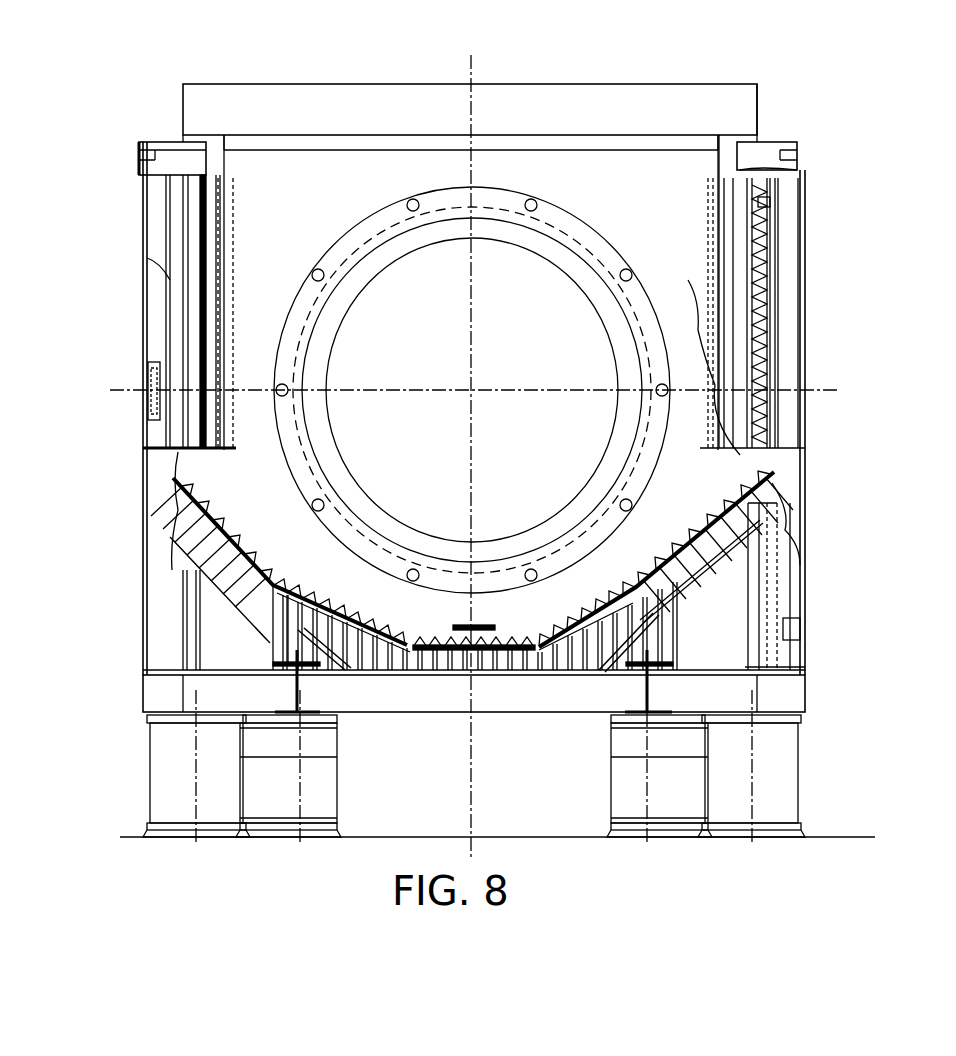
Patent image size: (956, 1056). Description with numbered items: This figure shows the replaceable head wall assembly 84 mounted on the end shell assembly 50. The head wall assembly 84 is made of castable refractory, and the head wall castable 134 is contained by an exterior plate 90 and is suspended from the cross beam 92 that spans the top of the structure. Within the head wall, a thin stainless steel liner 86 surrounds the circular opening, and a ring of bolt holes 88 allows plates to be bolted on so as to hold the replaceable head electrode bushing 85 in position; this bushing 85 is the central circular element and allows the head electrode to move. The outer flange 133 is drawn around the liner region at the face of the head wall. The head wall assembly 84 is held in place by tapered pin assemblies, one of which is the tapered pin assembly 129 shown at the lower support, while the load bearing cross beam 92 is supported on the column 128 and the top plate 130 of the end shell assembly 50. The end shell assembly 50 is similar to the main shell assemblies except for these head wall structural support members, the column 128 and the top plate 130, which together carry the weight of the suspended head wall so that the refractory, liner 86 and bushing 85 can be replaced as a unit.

The end shell assembly 50 is at (143, 690).
The replaceable head wall assembly 84 is at (200, 85).
The replaceable head electrode bushing 85 is at (385, 525).
The thin S.S. liner 86 is at (360, 247).
The bolt holes 88 is at (622, 257).
The exterior plate 90 is at (717, 157).
The cross beam 92 is at (625, 110).
The column 128 is at (160, 235).
The tapered pin assembly 129 is at (656, 643).
The top plate 130 is at (148, 135).
The outer flange 133 is at (298, 285).
The head wall castable 134 is at (320, 160).